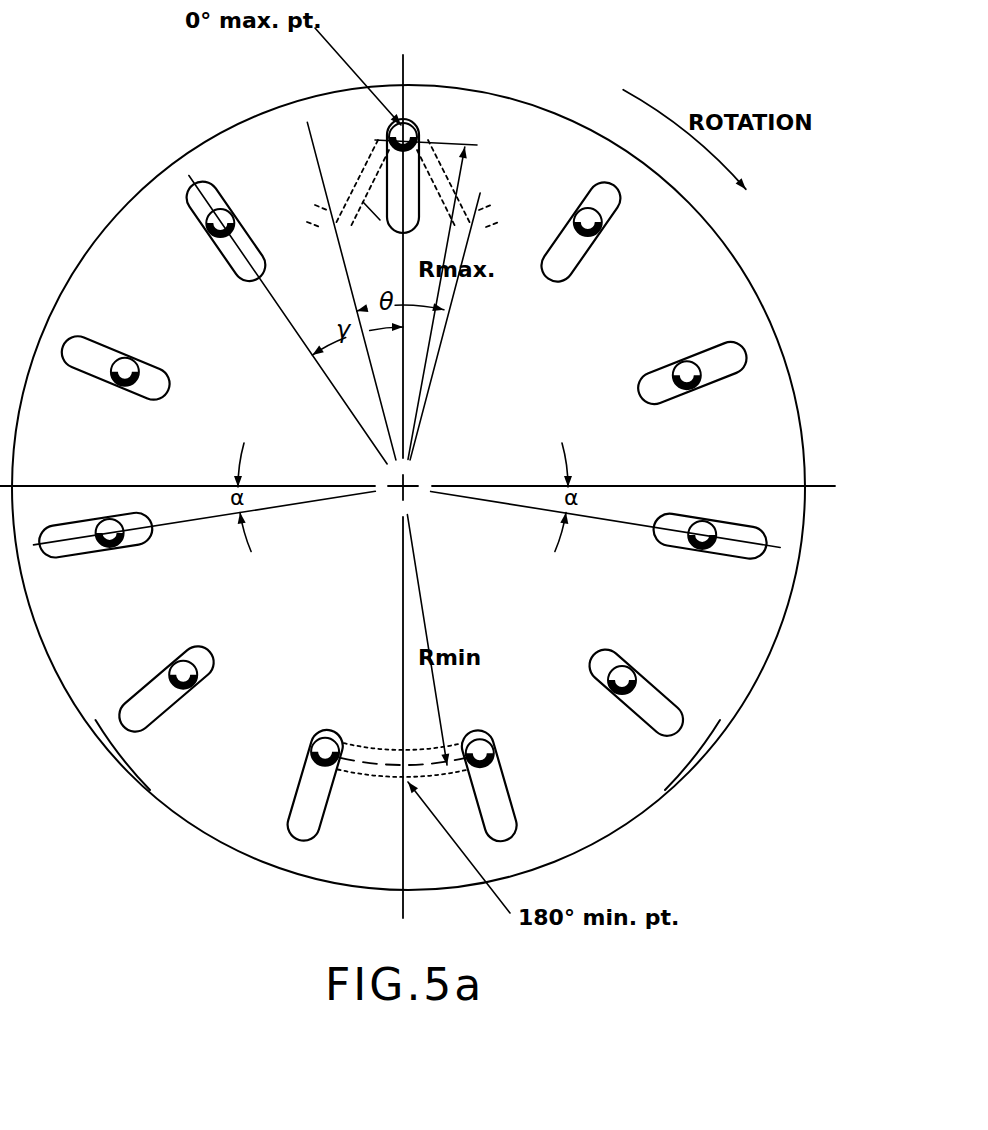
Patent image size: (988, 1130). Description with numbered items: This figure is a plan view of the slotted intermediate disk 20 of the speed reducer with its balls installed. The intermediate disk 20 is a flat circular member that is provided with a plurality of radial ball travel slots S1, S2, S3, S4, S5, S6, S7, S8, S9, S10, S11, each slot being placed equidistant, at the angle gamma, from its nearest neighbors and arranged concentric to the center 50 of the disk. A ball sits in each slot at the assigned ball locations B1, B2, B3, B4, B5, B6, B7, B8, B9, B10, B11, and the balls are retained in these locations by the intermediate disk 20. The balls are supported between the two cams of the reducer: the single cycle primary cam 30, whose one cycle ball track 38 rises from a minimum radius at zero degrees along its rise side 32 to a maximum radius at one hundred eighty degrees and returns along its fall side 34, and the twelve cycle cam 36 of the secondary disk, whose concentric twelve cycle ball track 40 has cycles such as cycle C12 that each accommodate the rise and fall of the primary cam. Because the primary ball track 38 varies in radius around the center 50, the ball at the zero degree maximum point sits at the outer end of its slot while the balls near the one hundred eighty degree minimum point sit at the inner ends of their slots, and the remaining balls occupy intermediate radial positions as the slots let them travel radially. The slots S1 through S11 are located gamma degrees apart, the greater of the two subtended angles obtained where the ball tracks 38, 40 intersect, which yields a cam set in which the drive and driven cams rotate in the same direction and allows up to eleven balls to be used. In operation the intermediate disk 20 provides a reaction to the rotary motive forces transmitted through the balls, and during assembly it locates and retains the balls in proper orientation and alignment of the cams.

The intermediate disk 20 is at (118, 207).
The rise side 32 is at (120, 766).
The fall side 34 is at (700, 762).
The center 50 is at (407, 485).
The twelve cycle cam 36 is at (353, 145).
The twelve cycle ball track 40 is at (367, 175).
The primary cam 30 is at (348, 836).
The one cycle ball track 38 is at (355, 767).
The twelfth cam cycle C12 is at (432, 180).
The ball location B1 is at (236, 214).
The ball location B2 is at (132, 361).
The ball location B3 is at (109, 518).
The ball location B4 is at (171, 664).
The ball location B5 is at (304, 752).
The ball location B6 is at (504, 753).
The ball location B7 is at (640, 667).
The ball location B8 is at (711, 521).
The ball location B9 is at (681, 358).
The ball location B10 is at (564, 209).
The ball location B11 is at (432, 128).
The radial ball travel slot S1 is at (225, 241).
The radial ball travel slot S2 is at (131, 373).
The radial ball travel slot S3 is at (114, 536).
The radial ball travel slot S4 is at (184, 689).
The radial ball travel slot S5 is at (318, 775).
The radial ball travel slot S6 is at (489, 775).
The radial ball travel slot S7 is at (625, 692).
The radial ball travel slot S8 is at (694, 536).
The radial ball travel slot S9 is at (678, 374).
The radial ball travel slot S10 is at (580, 244).
The radial ball travel slot S11 is at (408, 189).